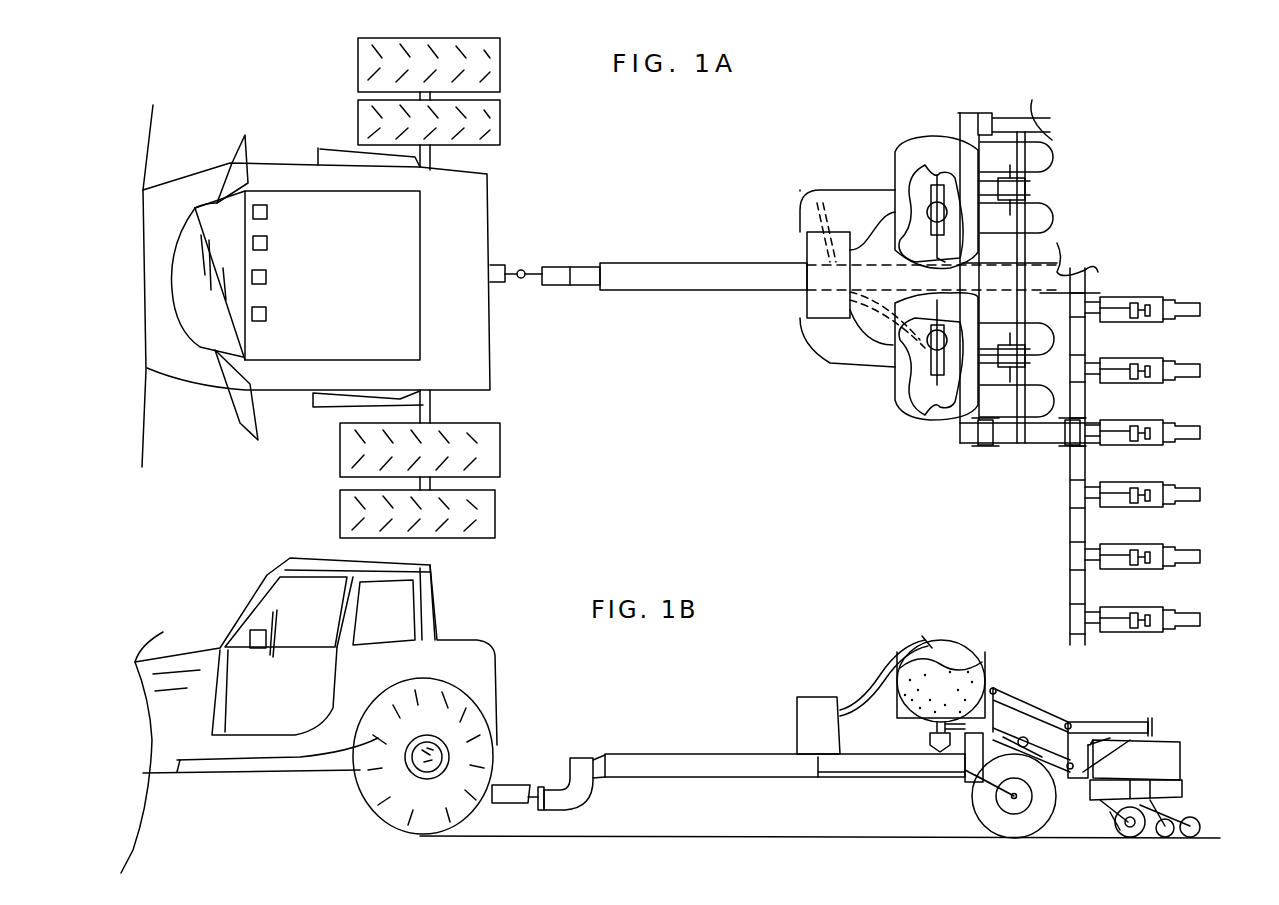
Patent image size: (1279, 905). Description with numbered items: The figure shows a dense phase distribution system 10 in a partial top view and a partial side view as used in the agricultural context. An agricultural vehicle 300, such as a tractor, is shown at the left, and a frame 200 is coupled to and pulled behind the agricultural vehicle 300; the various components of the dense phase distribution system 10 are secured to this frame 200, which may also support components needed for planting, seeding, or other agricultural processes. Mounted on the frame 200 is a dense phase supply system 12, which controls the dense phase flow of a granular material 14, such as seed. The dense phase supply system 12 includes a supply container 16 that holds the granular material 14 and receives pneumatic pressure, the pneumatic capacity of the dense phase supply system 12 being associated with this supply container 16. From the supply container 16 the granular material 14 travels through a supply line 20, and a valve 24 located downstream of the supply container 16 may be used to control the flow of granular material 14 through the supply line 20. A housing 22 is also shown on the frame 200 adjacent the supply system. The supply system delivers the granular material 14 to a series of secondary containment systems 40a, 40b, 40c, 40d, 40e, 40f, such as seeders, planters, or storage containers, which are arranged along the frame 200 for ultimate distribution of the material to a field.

In FIG. 1A, the dense phase distribution system 10 is at (857, 122).
In FIG. 1B, the dense phase distribution system 10 is at (897, 633).
In FIG. 1A, the dense phase supply system 12 is at (935, 134).
In FIG. 1B, the dense phase supply system 12 is at (893, 672).
In FIG. 1B, the granular material 14 is at (938, 692).
In FIG. 1A, the supply container 16 is at (890, 168).
In FIG. 1B, the supply container 16 is at (945, 640).
In FIG. 1A, the supply line 20 is at (929, 244).
In FIG. 1B, the supply line 20 is at (1101, 724).
In FIG. 1A, the control module housing 22 is at (808, 322).
In FIG. 1B, the control module housing 22 is at (793, 722).
In FIG. 1A, the valve 24 is at (934, 190).
In FIG. 1B, the valve 24 is at (920, 727).
In FIG. 1A, the secondary containment system 40a is at (1165, 297).
In FIG. 1A, the secondary containment system 40b is at (1165, 385).
In FIG. 1A, the secondary containment system 40c is at (1168, 420).
In FIG. 1A, the secondary containment system 40d is at (1165, 508).
In FIG. 1A, the secondary containment system 40e is at (1168, 545).
In FIG. 1A, the secondary containment system 40f is at (1165, 633).
In FIG. 1B, the secondary containment system 40f is at (1141, 787).
In FIG. 1A, the frame 200 is at (665, 261).
In FIG. 1B, the frame 200 is at (681, 751).
In FIG. 1A, the agricultural vehicle 300 is at (293, 112).
In FIG. 1B, the agricultural vehicle 300 is at (222, 589).